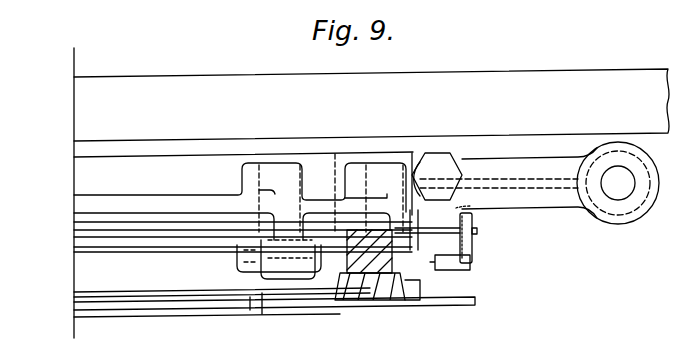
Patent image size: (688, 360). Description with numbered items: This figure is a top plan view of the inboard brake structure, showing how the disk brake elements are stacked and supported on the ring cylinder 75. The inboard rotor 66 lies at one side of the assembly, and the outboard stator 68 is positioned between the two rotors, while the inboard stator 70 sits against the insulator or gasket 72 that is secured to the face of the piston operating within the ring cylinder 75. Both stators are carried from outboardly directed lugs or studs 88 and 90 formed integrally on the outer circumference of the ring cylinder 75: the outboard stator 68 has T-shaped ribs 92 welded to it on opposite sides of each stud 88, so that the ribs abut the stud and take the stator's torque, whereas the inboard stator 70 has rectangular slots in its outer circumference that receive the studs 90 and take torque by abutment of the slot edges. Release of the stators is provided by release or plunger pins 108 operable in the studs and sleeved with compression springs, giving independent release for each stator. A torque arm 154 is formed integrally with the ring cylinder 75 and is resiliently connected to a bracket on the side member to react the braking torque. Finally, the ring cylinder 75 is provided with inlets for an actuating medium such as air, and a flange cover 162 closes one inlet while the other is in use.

The inboard rotor 66 is at (84, 278).
The outboard stator 68 is at (140, 308).
The inboard stator 70 is at (78, 237).
The insulator or gasket 72 is at (78, 223).
The ring cylinder 75 is at (84, 178).
The outboardly directed lugs or studs 88 is at (330, 292).
The outboardly directed lugs or studs 90 is at (302, 264).
The T-shaped ribs 92 is at (412, 296).
The release or plunger pins 108 is at (270, 278).
The torque arm 154 is at (549, 200).
The flange cover 162 is at (438, 168).